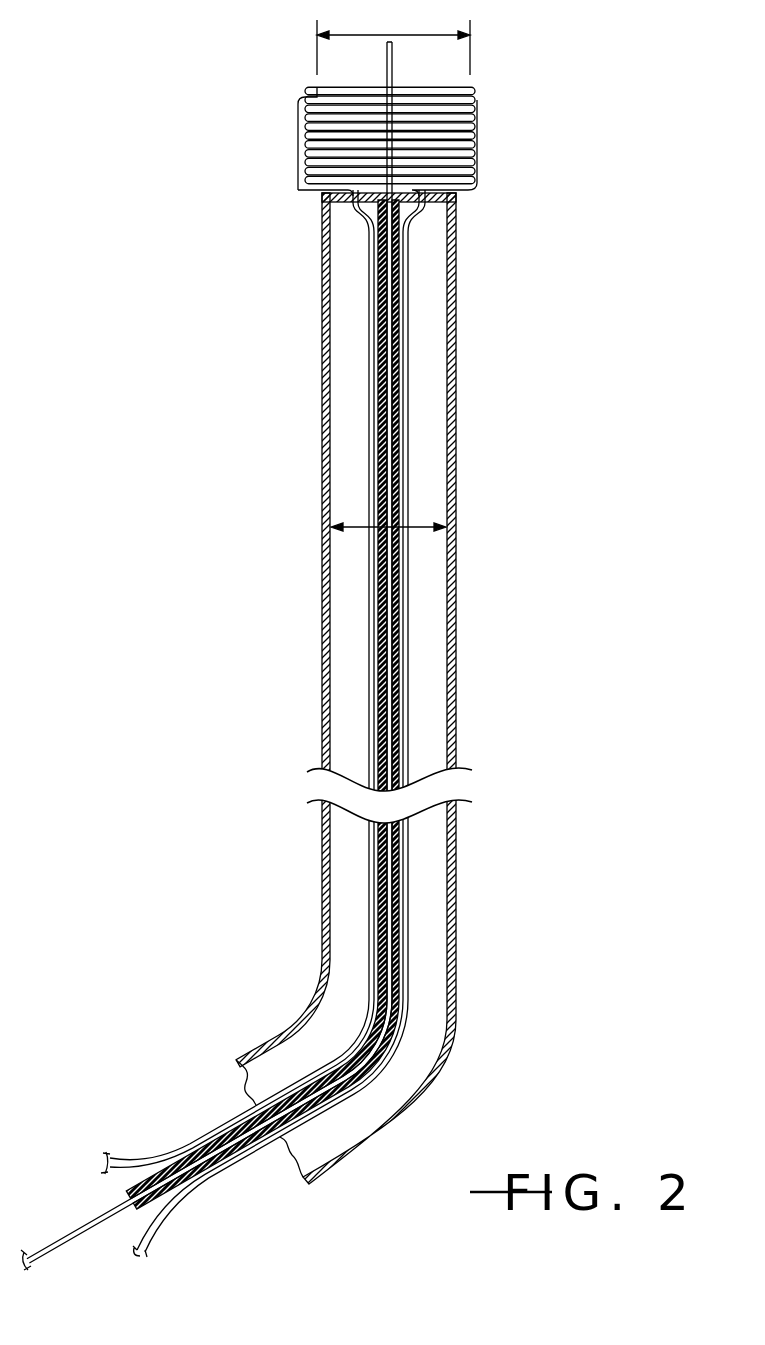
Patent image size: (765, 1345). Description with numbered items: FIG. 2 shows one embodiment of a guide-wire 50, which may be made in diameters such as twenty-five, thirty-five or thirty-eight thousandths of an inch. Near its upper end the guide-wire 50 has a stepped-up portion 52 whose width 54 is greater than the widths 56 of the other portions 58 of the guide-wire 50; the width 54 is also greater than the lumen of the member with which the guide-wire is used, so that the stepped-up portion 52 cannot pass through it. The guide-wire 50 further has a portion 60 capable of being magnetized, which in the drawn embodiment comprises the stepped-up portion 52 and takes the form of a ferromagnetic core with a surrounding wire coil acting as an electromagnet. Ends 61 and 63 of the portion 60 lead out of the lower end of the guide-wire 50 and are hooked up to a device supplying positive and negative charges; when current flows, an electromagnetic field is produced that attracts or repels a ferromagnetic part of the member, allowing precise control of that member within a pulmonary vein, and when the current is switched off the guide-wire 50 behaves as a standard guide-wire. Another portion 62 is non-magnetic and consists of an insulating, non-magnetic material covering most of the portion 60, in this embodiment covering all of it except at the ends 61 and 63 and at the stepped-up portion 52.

The guide-wire 50 is at (310, 638).
The stepped-up portion 52 is at (483, 146).
The width of the stepped-up portion 54 is at (365, 35).
The width of other portions 56 is at (422, 523).
The other portions of the guide-wire 58 is at (458, 567).
The magnetic portion 60 is at (302, 143).
The end of the magnetic portion 61 is at (126, 1158).
The non-magnetic portion 62 is at (458, 868).
The end of the magnetic portion 63 is at (147, 1233).